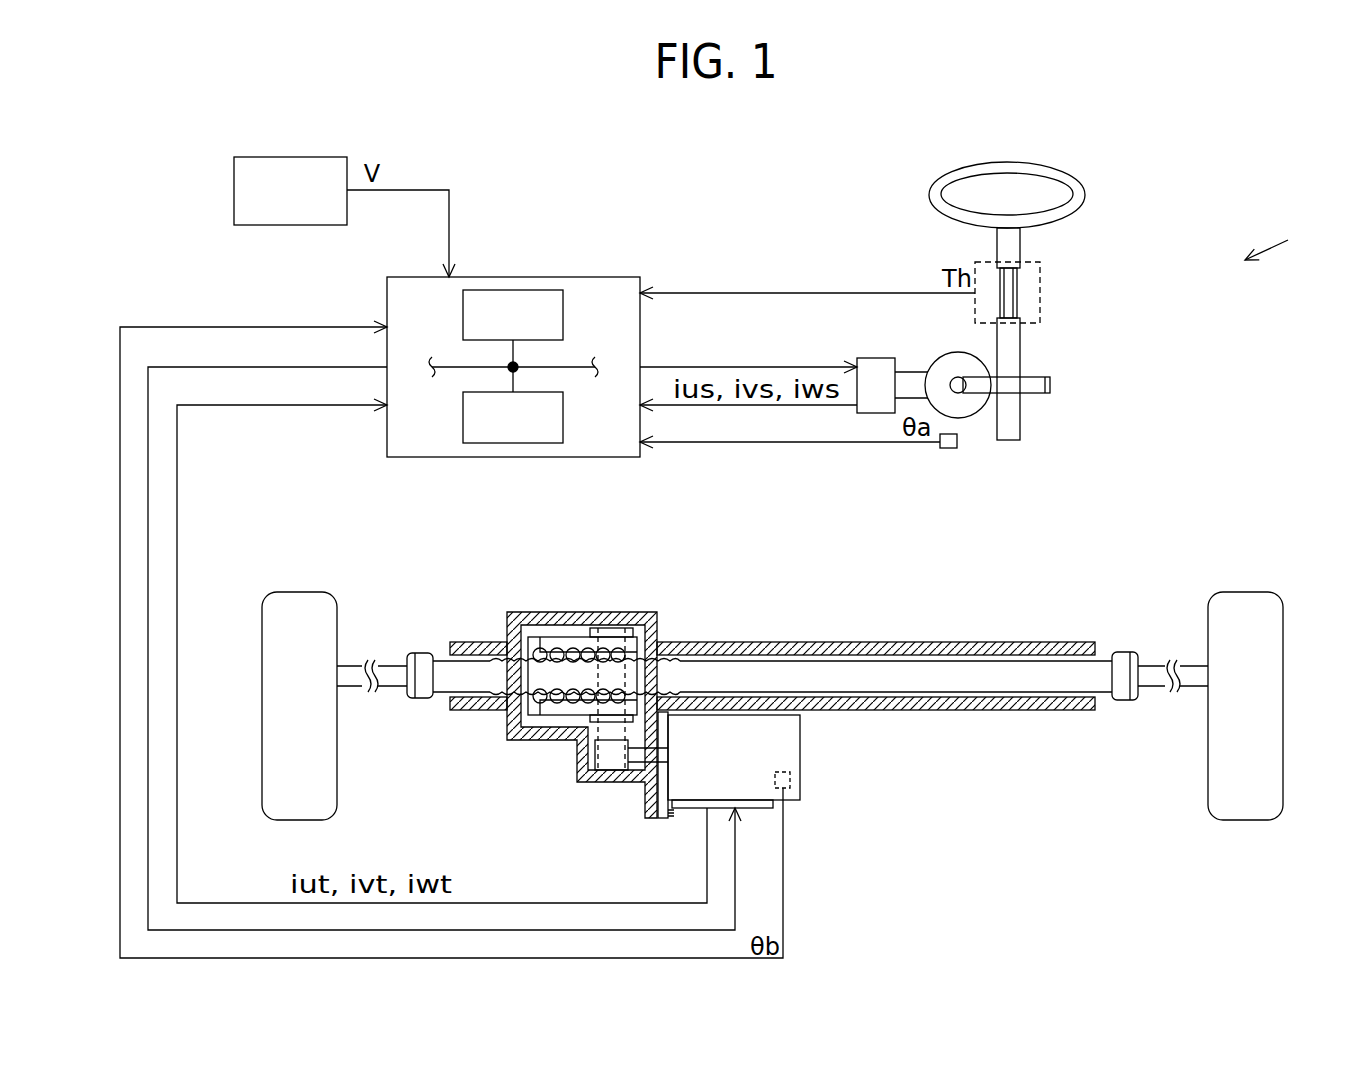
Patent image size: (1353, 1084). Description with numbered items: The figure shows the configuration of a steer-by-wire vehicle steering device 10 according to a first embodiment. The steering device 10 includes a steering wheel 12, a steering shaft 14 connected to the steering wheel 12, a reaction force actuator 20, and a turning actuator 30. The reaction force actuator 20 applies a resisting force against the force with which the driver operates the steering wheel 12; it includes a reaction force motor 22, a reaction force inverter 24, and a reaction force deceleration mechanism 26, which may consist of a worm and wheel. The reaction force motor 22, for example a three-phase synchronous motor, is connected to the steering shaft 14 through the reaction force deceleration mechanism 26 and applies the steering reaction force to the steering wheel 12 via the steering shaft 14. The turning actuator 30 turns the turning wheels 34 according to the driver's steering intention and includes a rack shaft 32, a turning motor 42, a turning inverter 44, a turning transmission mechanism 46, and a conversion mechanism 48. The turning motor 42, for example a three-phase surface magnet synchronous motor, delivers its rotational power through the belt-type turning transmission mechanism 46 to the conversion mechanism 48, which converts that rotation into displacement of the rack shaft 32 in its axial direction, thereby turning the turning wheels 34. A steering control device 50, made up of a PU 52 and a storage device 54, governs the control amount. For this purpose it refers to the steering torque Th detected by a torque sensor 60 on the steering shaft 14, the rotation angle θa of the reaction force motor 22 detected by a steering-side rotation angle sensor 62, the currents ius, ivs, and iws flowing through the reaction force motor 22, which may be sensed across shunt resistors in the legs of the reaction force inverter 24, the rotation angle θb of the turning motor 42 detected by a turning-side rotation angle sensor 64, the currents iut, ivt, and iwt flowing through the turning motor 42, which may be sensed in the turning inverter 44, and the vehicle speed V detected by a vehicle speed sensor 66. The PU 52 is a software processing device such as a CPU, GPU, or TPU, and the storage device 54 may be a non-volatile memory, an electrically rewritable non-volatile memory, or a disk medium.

The vehicle steering device 10 is at (1282, 240).
The steering wheel 12 is at (1066, 167).
The steering shaft 14 is at (1020, 350).
The reaction force actuator 20 is at (985, 390).
The reaction force motor 22 is at (944, 352).
The reaction force inverter 24 is at (876, 357).
The reaction force deceleration mechanism 26 is at (986, 400).
The turning actuator 30 is at (1155, 578).
The rack shaft 32 is at (748, 658).
The turning wheels 34 is at (292, 591).
The turning motor 42 is at (800, 752).
The turning inverter 44 is at (689, 812).
The turning transmission mechanism 46 is at (597, 780).
The conversion mechanism 48 is at (529, 742).
The steering control device 50 is at (598, 276).
The PU 52 is at (563, 315).
The storage device 54 is at (563, 418).
The torque sensor 60 is at (1040, 262).
The steering-side rotation angle sensor 62 is at (946, 450).
The turning-side rotation angle sensor 64 is at (780, 770).
The vehicle speed sensor 66 is at (292, 156).